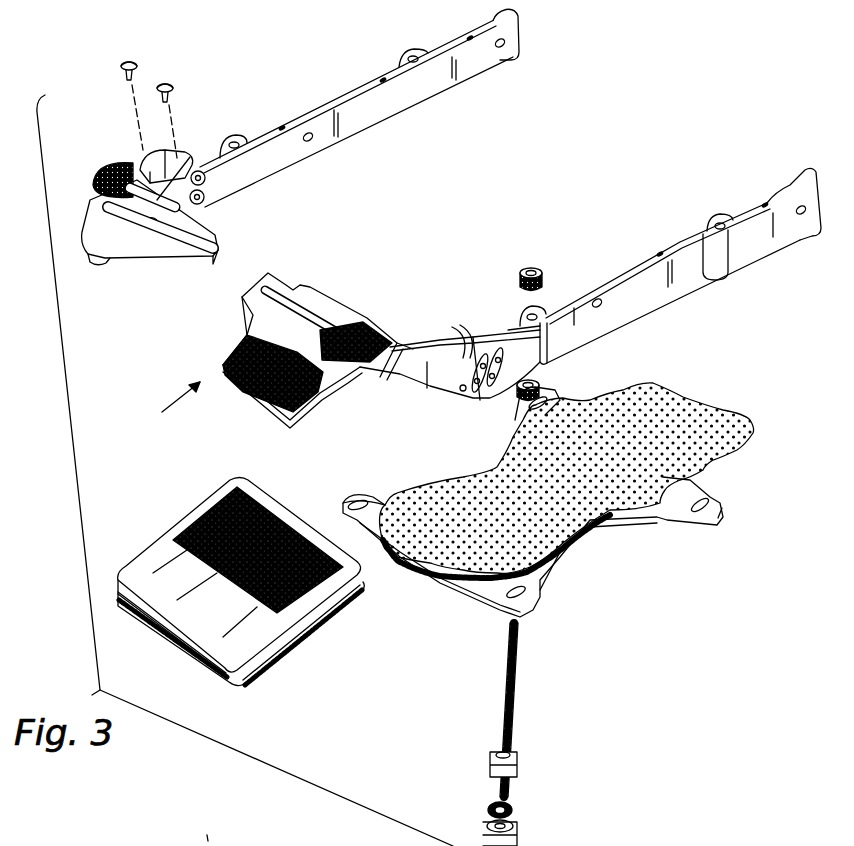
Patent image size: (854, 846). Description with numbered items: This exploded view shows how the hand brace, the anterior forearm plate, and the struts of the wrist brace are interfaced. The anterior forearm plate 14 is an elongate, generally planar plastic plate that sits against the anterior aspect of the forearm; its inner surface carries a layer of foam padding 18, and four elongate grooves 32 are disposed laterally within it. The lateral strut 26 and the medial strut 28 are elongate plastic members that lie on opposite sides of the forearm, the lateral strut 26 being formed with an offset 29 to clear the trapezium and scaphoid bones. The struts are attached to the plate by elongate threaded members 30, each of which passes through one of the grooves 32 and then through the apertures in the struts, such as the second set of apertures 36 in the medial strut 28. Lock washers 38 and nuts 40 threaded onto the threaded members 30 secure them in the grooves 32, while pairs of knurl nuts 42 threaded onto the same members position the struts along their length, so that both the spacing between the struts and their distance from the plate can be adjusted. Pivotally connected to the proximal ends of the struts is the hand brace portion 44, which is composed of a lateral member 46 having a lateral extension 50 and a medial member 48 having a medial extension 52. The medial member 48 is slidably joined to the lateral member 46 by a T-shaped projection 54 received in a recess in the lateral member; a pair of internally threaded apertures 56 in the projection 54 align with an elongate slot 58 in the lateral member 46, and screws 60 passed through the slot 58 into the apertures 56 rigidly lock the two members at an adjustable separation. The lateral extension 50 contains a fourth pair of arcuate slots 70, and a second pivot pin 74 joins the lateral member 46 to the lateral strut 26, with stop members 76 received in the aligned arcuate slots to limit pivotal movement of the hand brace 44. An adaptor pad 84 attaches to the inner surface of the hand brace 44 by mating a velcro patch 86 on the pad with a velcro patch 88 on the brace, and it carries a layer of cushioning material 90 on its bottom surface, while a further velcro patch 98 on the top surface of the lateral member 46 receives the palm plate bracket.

The anterior forearm plate 14 is at (668, 517).
The foam padding 18 is at (683, 413).
The lateral strut 26 is at (757, 233).
The medial strut 28 is at (460, 67).
The offset 29 is at (513, 320).
The threaded members 30 is at (515, 695).
The elongate grooves 32 is at (543, 403).
The second set of apertures 36 is at (235, 135).
The lock washers 38 is at (513, 808).
The nuts 40 is at (490, 757).
The knurl nuts 42 is at (543, 270).
The hand brace portion 44 is at (161, 611).
The lateral member 46 is at (323, 300).
The medial member 48 is at (105, 260).
The lateral extension 50 is at (390, 383).
The medial extension 52 is at (140, 160).
The T-shaped projection 54 is at (195, 263).
The internally threaded apertures 56 is at (195, 230).
The elongate slot 58 is at (287, 300).
The screws 60 is at (157, 62).
The fourth pair of arcuate slots 70 is at (460, 330).
The second pivot pin 74 is at (463, 391).
The stop members 76 is at (206, 182).
The adaptor pad 84 is at (283, 643).
The velcro patch 86 is at (213, 500).
The velcro patch 88 is at (313, 419).
The cushioning material 90 is at (170, 637).
The velcro patch 98 is at (238, 345).